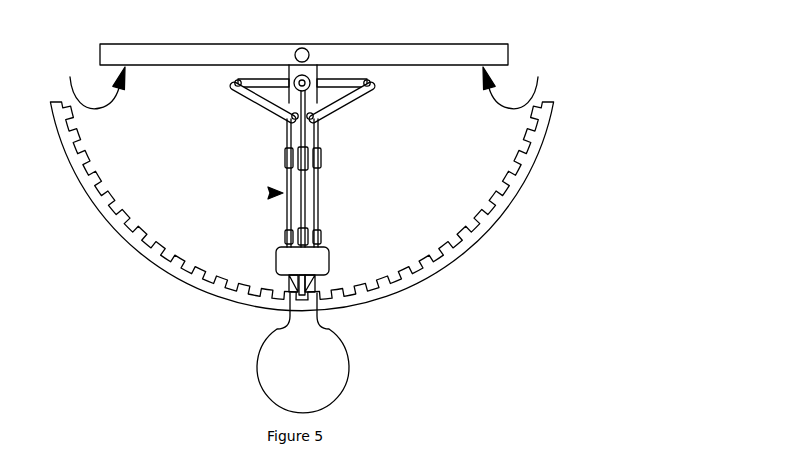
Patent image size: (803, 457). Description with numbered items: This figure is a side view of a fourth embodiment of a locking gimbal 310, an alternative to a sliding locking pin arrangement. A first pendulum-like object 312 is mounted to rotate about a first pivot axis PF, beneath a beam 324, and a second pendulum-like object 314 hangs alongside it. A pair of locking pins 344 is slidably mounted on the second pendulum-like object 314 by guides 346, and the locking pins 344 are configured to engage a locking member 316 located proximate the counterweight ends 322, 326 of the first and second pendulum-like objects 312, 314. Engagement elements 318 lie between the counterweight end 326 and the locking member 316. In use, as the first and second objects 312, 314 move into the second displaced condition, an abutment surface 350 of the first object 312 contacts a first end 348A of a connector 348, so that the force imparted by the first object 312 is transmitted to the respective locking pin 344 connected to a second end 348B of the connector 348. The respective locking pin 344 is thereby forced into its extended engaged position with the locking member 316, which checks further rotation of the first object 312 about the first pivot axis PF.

The seismic dispensing system 310 is at (644, 58).
The first pendulum-like object 312 is at (300, 103).
The second pendulum-like object 314 is at (268, 194).
The locking member 316 is at (421, 287).
The pawl 318 is at (293, 283).
The counterweight end 322 is at (316, 366).
The beam 324 is at (412, 44).
The counterweight end 326 is at (312, 262).
The locking pin 344 is at (319, 205).
The guide 346 is at (284, 158).
The connector 348 is at (265, 103).
The first end of connector 348A is at (234, 84).
The second end of connector 348B is at (291, 119).
The abutment surface 350 is at (306, 84).
The first pivot axis PF is at (309, 53).